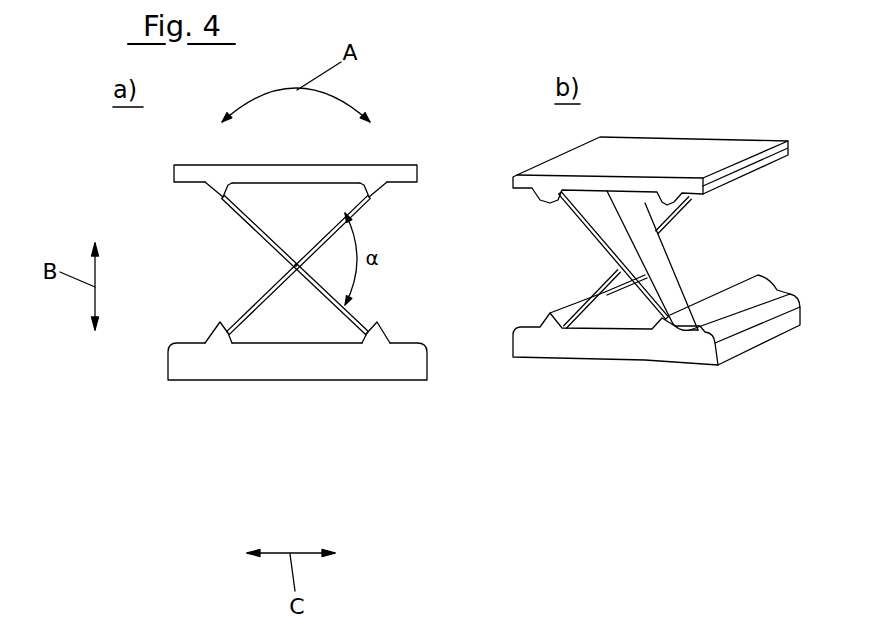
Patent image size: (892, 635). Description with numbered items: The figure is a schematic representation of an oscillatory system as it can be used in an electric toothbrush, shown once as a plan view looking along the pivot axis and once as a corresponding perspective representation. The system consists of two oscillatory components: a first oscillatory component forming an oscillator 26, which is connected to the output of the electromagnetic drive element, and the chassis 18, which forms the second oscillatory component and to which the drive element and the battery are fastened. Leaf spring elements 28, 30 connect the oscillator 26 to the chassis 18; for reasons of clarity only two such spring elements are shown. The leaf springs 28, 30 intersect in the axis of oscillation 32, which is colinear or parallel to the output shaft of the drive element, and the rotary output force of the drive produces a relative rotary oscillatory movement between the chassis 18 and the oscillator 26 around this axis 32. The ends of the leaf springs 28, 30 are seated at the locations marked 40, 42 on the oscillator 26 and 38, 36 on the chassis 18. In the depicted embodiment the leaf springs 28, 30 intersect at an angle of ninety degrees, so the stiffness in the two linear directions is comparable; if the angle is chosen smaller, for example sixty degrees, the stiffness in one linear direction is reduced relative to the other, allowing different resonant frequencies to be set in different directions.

In FIG. 4a, the chassis 18 is at (303, 377).
In FIG. 4b, the chassis 18 is at (635, 352).
In FIG. 4a, the oscillator 26 is at (345, 172).
In FIG. 4b, the oscillator 26 is at (682, 153).
In FIG. 4a, the leaf spring element 28 is at (253, 225).
In FIG. 4b, the leaf spring element 28 is at (667, 275).
In FIG. 4a, the leaf spring element 30 is at (253, 303).
In FIG. 4b, the leaf spring element 30 is at (693, 210).
In FIG. 4a, the axis of oscillation 32 is at (297, 267).
In FIG. 4a, the lower right bearing pad 36 is at (370, 317).
In FIG. 4a, the lower left bearing pad 38 is at (217, 322).
In FIG. 4a, the upper left bearing pad 40 is at (222, 201).
In FIG. 4a, the upper right bearing pad 42 is at (370, 203).